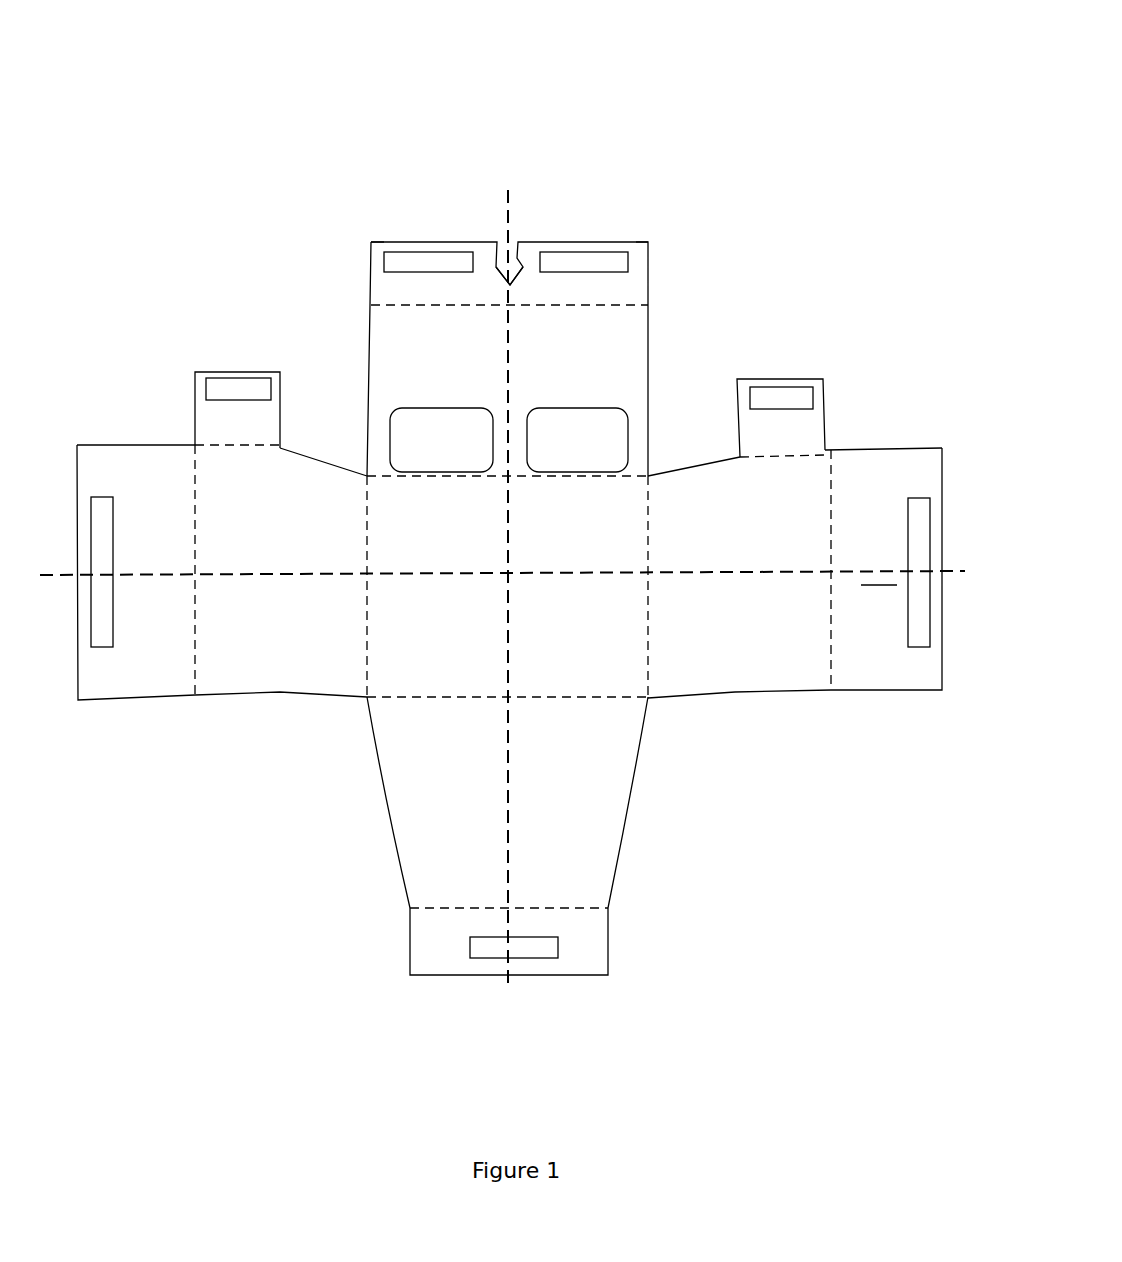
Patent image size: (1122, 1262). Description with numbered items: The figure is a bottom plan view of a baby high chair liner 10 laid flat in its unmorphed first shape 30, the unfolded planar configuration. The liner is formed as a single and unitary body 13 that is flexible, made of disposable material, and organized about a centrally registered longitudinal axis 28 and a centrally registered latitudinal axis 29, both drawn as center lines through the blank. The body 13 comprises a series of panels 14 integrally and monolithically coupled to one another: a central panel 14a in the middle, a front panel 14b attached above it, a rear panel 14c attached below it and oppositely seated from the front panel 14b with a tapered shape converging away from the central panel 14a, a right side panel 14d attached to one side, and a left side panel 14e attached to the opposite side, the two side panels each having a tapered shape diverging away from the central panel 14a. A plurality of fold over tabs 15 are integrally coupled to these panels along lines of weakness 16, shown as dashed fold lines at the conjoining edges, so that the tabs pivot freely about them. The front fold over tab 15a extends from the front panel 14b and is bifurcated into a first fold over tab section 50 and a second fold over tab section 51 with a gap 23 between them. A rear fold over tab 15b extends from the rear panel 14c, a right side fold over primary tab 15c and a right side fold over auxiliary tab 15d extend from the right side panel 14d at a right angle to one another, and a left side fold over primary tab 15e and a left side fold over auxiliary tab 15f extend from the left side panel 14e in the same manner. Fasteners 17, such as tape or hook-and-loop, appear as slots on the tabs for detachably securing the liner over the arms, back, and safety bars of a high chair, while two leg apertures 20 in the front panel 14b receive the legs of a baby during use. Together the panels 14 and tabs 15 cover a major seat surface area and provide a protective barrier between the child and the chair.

The baby high chair liner 10 is at (712, 90).
The single and unitary body 13 is at (250, 260).
The panels 14 is at (243, 840).
The central panel 14a is at (468, 635).
The front panel 14b is at (481, 378).
The rear panel 14c is at (490, 818).
The right side panel 14d is at (290, 631).
The left side panel 14e is at (754, 629).
The fold over tabs 15 is at (873, 780).
The front fold over tab 15a is at (533, 300).
The rear fold over tab 15b is at (463, 939).
The right side fold over primary tab 15c is at (168, 631).
The right side fold over auxiliary tab 15d is at (271, 435).
The left side fold over primary tab 15e is at (886, 569).
The left side fold over auxiliary tab 15f is at (768, 446).
The lines of weakness 16 is at (638, 305).
The fasteners 17 is at (453, 255).
The leg apertures 20 is at (410, 425).
The gap 23 is at (500, 258).
The longitudinal axis 28 is at (513, 210).
The latitudinal axis 29 is at (170, 578).
The unmorphed first shape 30 is at (373, 132).
The first fold over tab section 50 is at (383, 245).
The second fold over tab section 51 is at (641, 248).